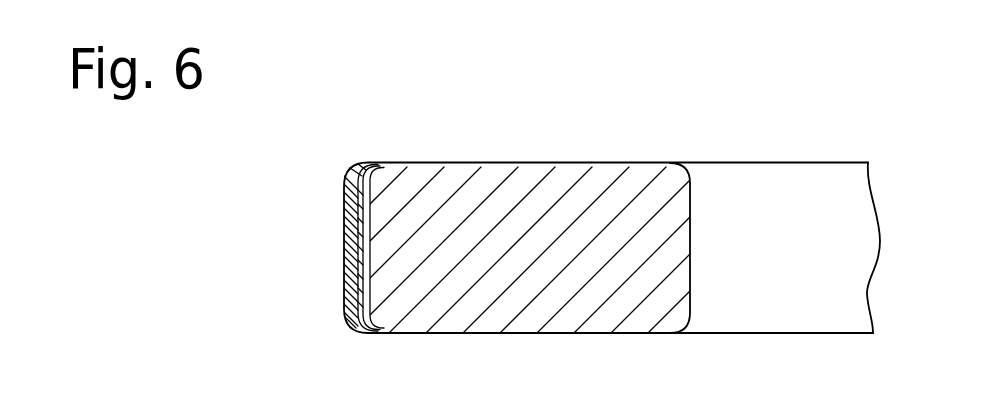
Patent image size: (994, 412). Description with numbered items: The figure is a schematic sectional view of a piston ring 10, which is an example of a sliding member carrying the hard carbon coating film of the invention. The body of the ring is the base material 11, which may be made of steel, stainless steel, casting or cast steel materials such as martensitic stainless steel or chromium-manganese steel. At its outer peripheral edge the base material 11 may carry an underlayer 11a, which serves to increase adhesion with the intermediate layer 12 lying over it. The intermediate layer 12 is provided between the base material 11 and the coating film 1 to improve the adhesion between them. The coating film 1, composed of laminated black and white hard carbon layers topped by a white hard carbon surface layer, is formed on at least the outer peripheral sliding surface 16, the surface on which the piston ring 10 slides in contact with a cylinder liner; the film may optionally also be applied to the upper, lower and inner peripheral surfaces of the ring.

The piston ring 10 is at (542, 253).
The base material 11 is at (530, 176).
The underlayer 11a is at (366, 208).
The intermediate layer 12 is at (358, 242).
The coating film 1 is at (352, 277).
The sliding surface 16 is at (325, 247).